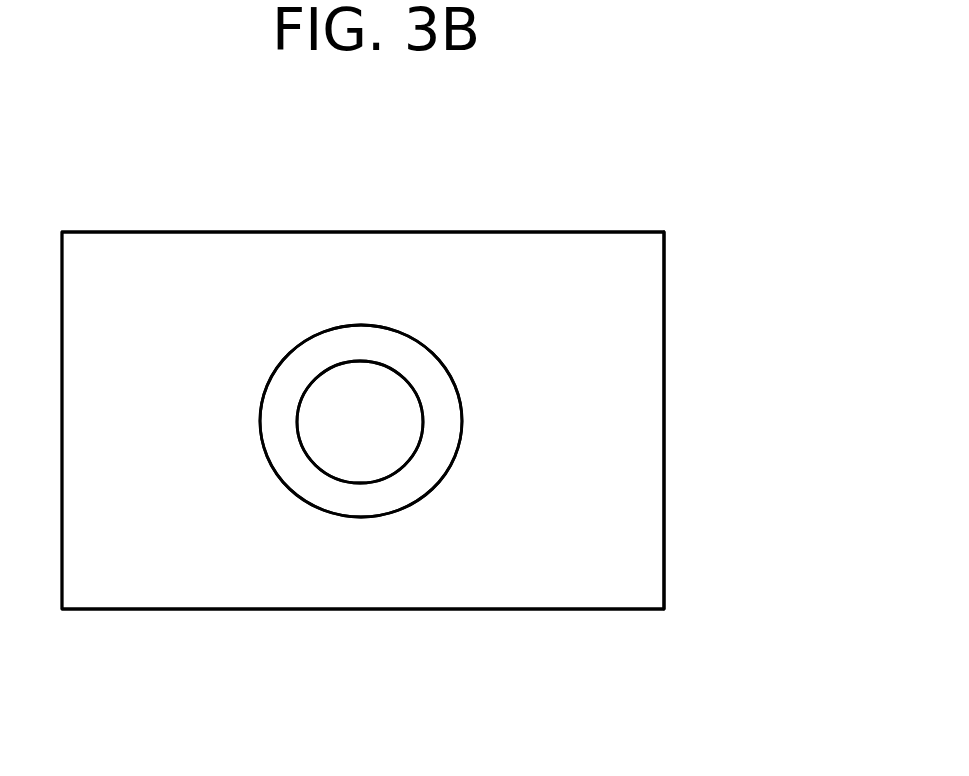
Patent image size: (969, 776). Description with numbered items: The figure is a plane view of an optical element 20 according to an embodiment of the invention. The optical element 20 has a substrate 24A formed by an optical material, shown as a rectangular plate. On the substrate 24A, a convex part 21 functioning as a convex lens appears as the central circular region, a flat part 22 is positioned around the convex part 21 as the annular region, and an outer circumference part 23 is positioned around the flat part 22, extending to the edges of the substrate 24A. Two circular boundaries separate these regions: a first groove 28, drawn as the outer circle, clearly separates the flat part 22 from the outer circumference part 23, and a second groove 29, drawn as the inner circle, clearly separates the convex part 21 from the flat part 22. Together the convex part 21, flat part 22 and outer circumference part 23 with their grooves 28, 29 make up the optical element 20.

The optical element 20 is at (389, 149).
The convex part 21 is at (395, 382).
The flat part 22 is at (443, 382).
The outer circumference part 23 is at (655, 284).
The substrate 24A is at (664, 330).
The first groove 28 is at (332, 518).
The second groove 29 is at (413, 457).